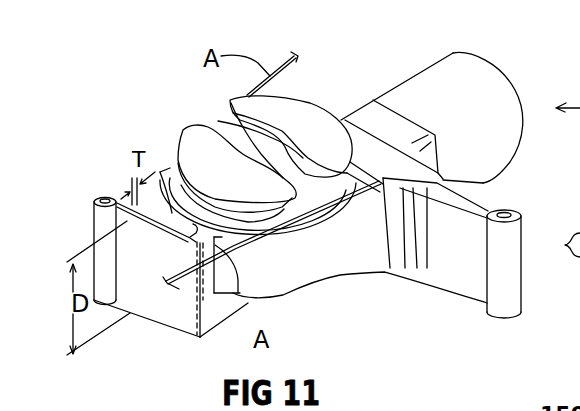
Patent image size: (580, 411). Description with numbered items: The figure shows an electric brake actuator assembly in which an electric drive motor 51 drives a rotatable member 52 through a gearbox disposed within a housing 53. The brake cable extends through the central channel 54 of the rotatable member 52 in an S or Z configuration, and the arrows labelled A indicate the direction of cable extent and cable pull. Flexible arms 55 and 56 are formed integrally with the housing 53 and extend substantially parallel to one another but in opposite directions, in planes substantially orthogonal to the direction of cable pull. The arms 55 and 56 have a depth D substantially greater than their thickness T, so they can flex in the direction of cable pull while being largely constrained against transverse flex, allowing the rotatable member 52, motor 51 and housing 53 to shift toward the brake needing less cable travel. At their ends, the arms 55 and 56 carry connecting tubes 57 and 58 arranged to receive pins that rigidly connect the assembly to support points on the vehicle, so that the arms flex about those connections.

The electric drive motor 51 is at (433, 83).
The rotatable member 52 is at (192, 147).
The housing 53 is at (313, 257).
The central channel 54 is at (207, 115).
The flexible arm 55 is at (165, 305).
The flexible arm 56 is at (486, 204).
The connecting tube 57 is at (99, 223).
The connecting tube 58 is at (497, 307).